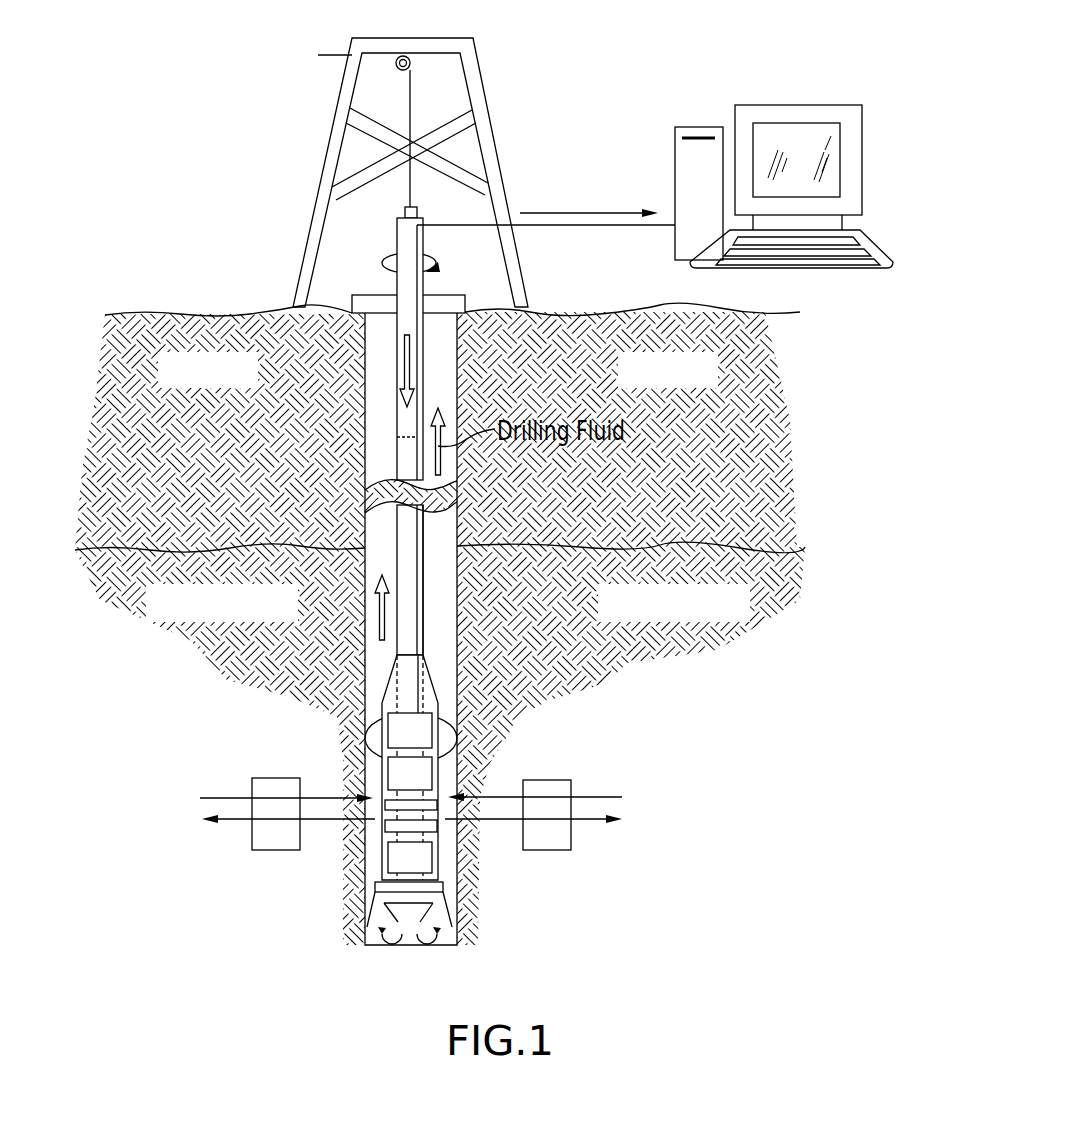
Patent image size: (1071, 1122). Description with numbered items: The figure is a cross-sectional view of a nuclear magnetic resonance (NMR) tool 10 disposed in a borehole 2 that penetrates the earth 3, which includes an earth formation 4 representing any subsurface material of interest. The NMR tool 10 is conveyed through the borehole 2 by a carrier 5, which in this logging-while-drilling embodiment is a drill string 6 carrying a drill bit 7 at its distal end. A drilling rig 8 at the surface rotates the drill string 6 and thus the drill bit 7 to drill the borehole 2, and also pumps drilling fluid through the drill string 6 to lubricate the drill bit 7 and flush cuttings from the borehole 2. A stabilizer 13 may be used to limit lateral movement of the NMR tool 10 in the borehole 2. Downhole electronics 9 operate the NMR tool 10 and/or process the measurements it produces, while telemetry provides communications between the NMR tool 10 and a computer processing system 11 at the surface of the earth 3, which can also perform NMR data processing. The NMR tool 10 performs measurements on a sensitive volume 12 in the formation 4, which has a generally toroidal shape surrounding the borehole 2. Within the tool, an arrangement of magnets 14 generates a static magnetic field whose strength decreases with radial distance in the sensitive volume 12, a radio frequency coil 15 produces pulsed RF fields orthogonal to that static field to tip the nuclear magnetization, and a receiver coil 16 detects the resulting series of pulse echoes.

The borehole 2 is at (370, 452).
The earth 3 is at (252, 382).
The earth formation 4 is at (290, 615).
The carrier 5 is at (397, 535).
The drill string 6 is at (397, 413).
The drill bit 7 is at (383, 903).
The drilling rig 8 is at (266, 254).
The downhole electronics 9 is at (418, 744).
The nuclear magnetic resonance (NMR) tool 10 is at (383, 767).
The computer processing system 11 is at (692, 132).
The sensitive volume 12 is at (272, 783).
The stabilizer 13 is at (447, 718).
The arrangement of magnets 14 is at (423, 620).
The radio frequency (RF) coil 15 is at (435, 825).
The receiver coil 16 is at (430, 797).